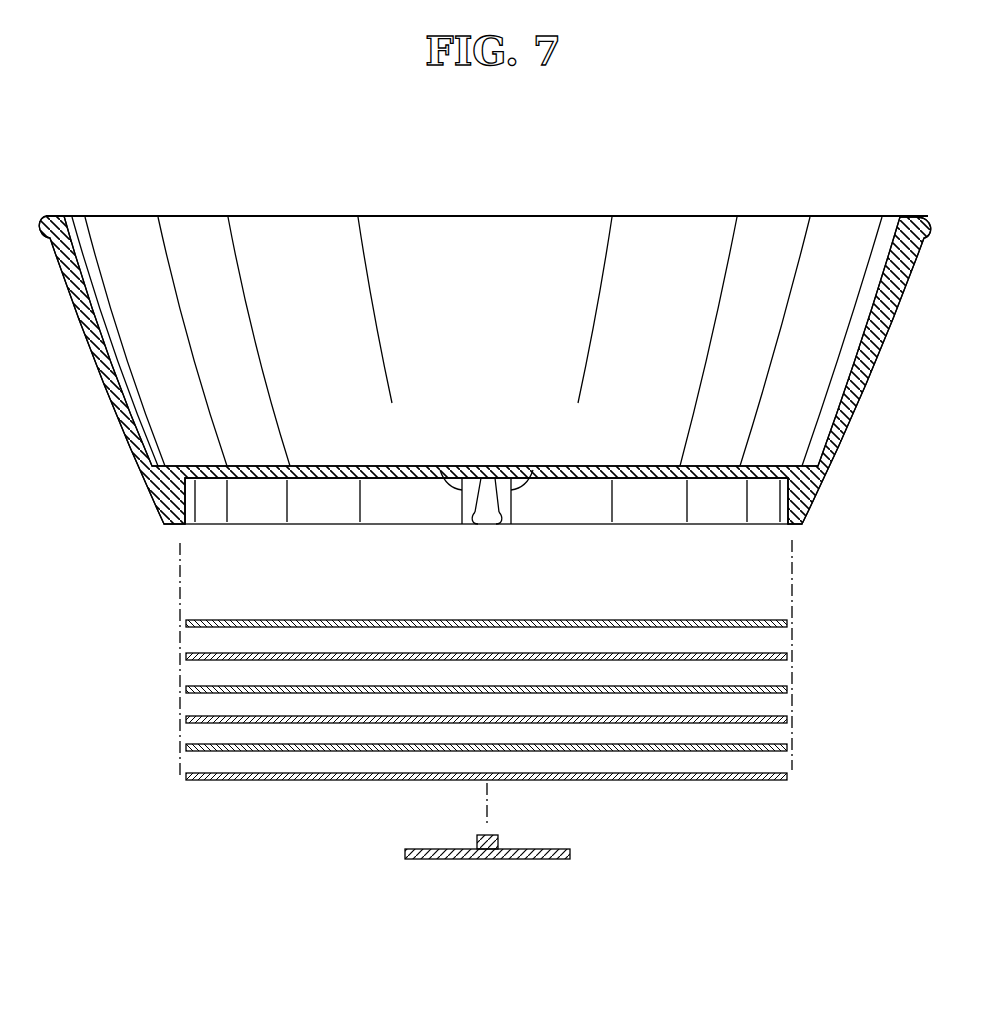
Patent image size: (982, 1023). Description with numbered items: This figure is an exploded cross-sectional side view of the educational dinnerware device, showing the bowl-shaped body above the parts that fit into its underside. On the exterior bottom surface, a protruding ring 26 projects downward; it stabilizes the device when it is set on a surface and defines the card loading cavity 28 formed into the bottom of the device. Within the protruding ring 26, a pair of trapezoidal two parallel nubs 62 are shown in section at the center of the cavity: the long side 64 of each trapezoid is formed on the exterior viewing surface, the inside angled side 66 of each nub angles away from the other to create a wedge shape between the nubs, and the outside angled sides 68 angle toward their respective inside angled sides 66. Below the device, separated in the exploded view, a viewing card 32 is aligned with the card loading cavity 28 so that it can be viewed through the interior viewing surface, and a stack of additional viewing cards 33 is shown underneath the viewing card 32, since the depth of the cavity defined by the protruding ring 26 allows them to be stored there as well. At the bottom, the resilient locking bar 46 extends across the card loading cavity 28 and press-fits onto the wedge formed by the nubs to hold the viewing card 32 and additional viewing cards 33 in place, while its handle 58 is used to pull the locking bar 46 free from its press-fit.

The protruding ring 26 is at (800, 524).
The card loading cavity 28 is at (335, 513).
The viewing card 32 is at (771, 620).
The additional viewing cards 33 is at (800, 647).
The resilient locking bar 46 is at (500, 843).
The handle 58 is at (538, 859).
The two parallel nubs 62 is at (462, 503).
The long side 64 is at (507, 477).
The inside angled side 66 is at (478, 524).
The outside angled sides 68 is at (440, 470).